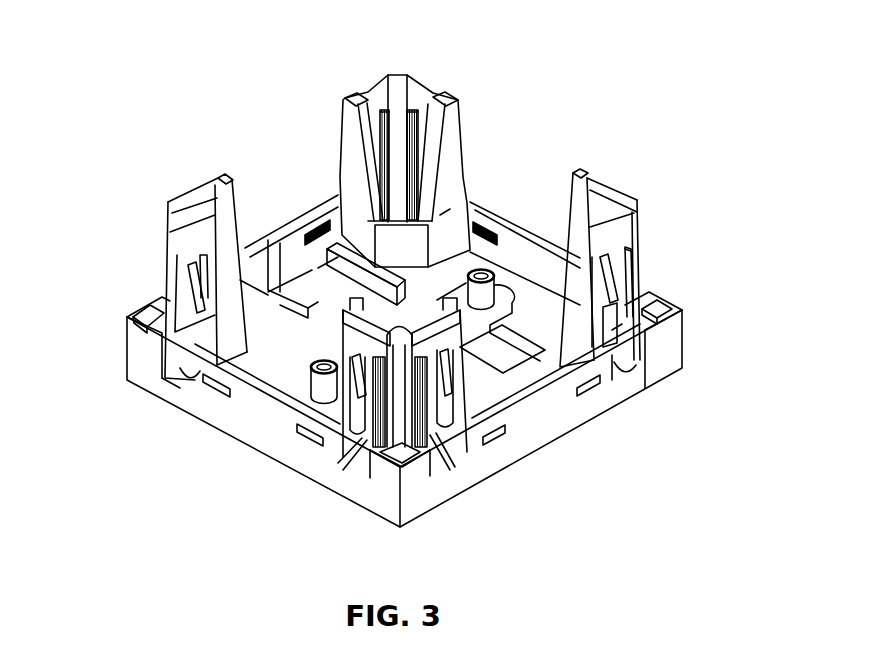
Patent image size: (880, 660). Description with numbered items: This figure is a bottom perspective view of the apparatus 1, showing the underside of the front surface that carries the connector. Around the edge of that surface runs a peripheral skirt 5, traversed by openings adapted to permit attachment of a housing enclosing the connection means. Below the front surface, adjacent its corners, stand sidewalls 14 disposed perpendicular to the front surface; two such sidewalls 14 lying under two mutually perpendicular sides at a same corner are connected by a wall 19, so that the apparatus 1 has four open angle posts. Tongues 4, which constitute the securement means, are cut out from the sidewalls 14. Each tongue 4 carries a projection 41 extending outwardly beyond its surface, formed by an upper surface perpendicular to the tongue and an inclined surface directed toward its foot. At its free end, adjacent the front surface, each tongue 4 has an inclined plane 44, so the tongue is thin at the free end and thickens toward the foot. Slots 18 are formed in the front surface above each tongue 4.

The apparatus 1 is at (253, 450).
The tongue 4 is at (427, 85).
The peripheral skirt 5 is at (670, 332).
The sidewall 14 is at (371, 83).
The slot 18 is at (190, 377).
The wall 19 is at (450, 217).
The projection 41 is at (314, 440).
The inclined plane 44 is at (618, 328).